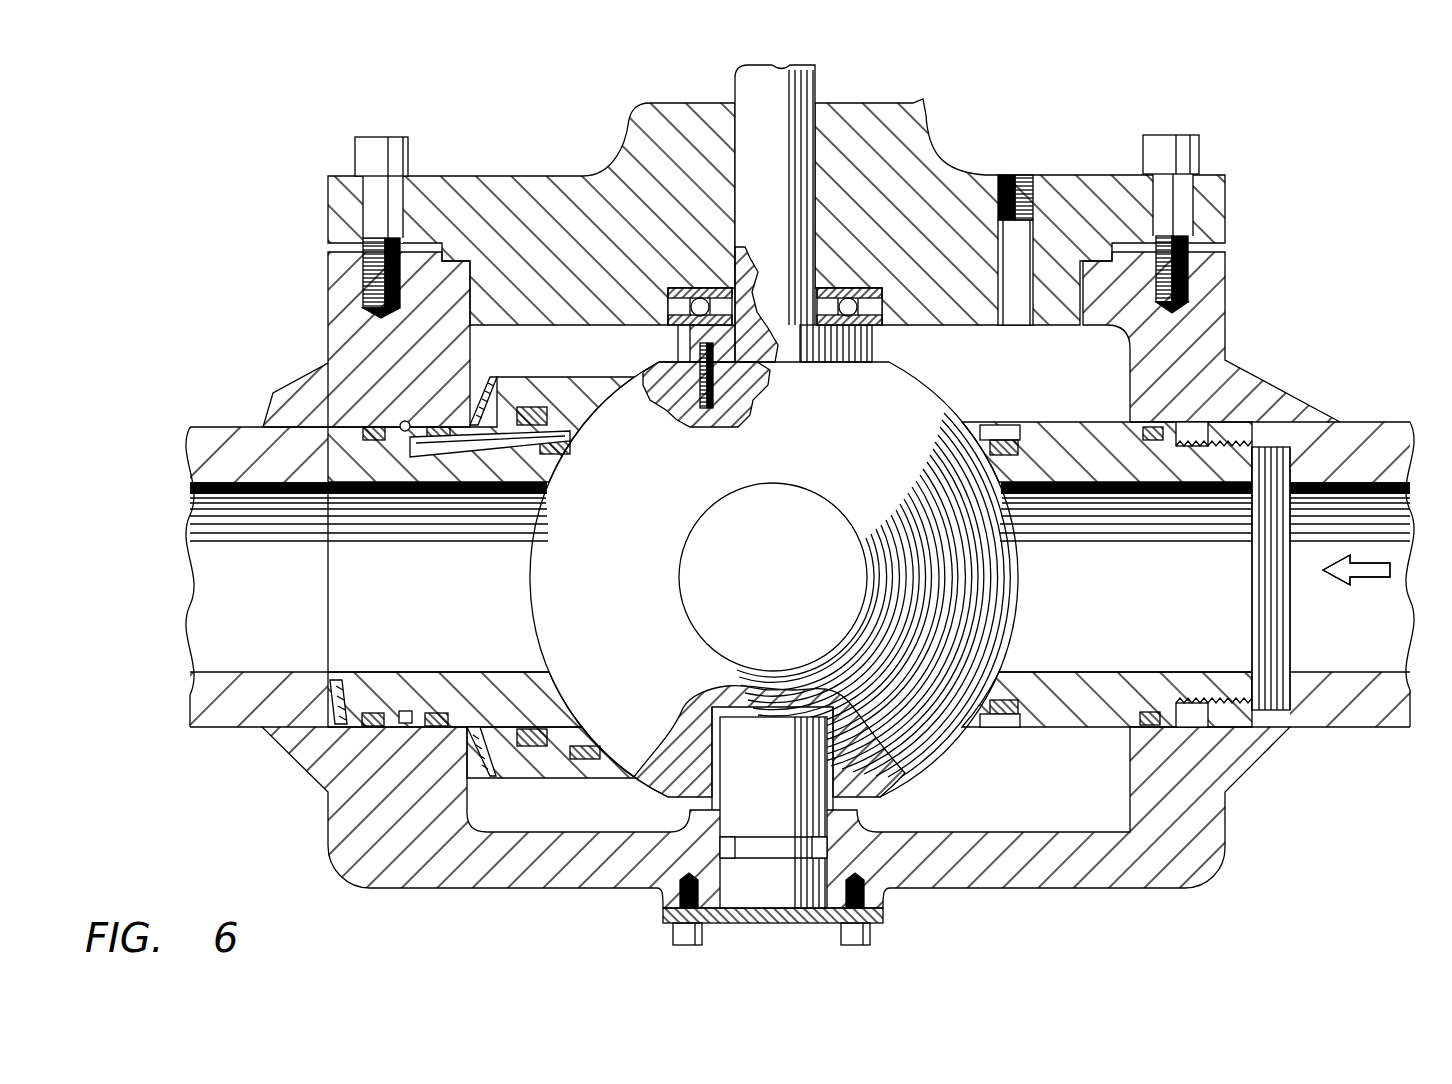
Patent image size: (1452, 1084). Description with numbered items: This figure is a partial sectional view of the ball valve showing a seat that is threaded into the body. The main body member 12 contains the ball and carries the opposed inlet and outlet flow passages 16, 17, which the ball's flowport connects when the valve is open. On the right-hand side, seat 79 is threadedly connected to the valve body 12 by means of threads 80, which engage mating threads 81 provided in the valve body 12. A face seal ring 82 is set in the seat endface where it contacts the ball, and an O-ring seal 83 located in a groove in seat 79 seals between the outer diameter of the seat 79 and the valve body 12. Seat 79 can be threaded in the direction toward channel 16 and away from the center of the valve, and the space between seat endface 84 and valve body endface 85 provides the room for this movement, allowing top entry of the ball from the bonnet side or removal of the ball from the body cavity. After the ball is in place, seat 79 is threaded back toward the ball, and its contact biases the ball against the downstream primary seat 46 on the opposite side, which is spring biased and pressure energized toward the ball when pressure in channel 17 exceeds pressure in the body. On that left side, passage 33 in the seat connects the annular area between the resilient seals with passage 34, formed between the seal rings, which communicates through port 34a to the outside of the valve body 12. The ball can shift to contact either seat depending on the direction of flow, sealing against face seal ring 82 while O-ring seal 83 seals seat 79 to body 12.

The main body member 12 is at (1243, 372).
The inlet flow passage 16 is at (1367, 667).
The outlet flow passage 17 is at (258, 672).
The passage 33 is at (488, 520).
The passage 34 is at (405, 711).
The port 34a is at (402, 422).
The downstream primary seat 46 is at (477, 672).
The seat 79 is at (1057, 671).
The threads 80 is at (1213, 700).
The mating threads 81 is at (1270, 447).
The face seal ring 82 is at (997, 428).
The O-ring seal 83 is at (1142, 712).
The seat endface 84 is at (1257, 637).
The valve body endface 85 is at (1288, 585).